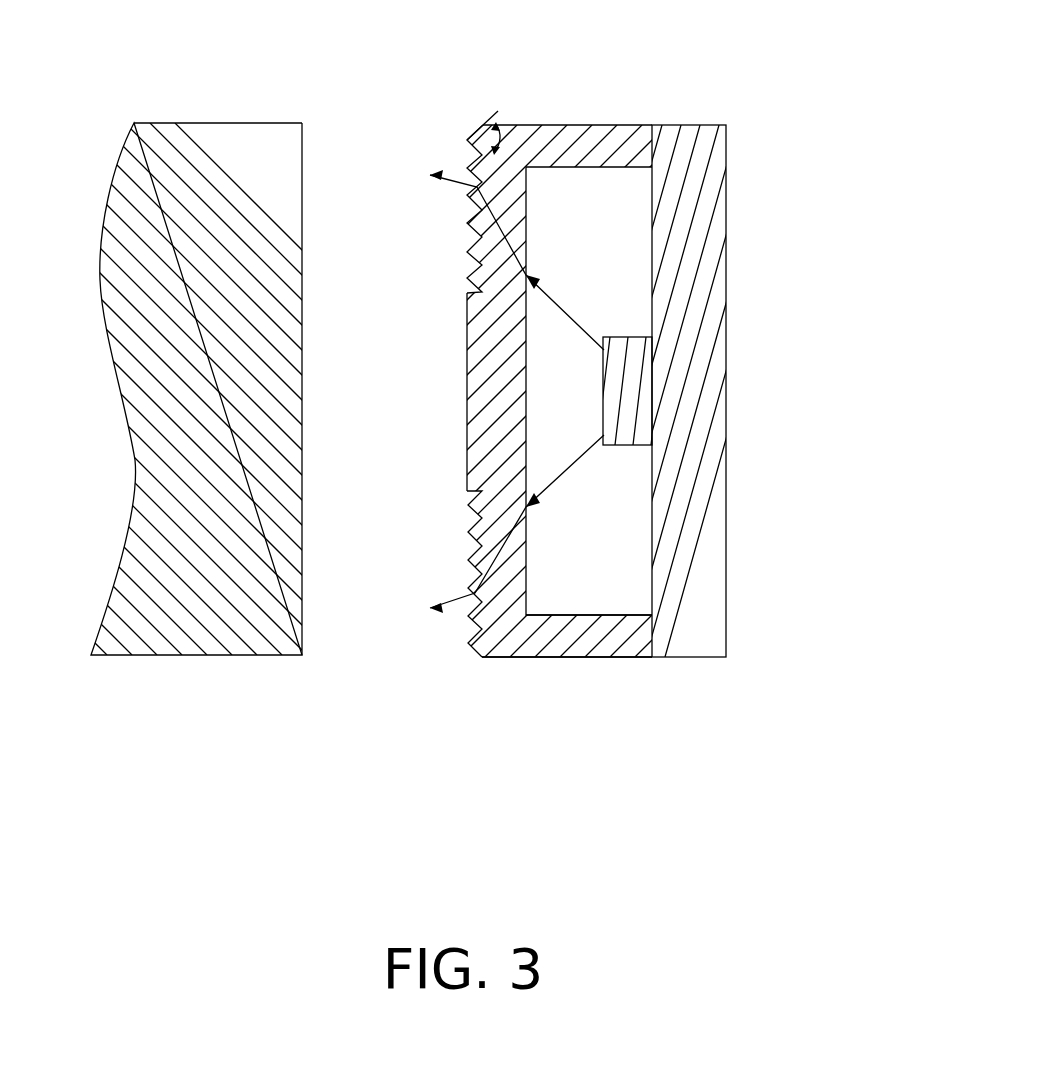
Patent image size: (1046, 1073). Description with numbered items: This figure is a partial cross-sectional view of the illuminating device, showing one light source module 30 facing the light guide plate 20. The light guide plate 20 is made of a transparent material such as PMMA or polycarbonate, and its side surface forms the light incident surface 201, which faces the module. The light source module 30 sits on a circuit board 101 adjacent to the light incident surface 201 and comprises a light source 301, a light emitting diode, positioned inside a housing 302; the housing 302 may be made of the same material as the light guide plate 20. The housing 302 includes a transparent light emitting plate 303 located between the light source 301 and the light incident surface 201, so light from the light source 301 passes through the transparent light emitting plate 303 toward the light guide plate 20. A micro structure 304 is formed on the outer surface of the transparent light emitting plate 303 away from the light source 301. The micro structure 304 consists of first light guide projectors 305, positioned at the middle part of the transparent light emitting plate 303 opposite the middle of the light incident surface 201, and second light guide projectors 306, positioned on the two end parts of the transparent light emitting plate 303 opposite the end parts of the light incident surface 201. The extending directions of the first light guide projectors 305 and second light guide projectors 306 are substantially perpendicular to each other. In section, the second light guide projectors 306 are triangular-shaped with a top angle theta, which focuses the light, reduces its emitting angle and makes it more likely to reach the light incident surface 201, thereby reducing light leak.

The light guide plate 20 is at (208, 147).
The light incident surface 201 is at (302, 606).
The light source module 30 is at (628, 78).
The circuit board 101 is at (690, 217).
The light source 301 is at (623, 392).
The housing 302 is at (587, 635).
The transparent light emitting plate 303 is at (515, 317).
The micro structure 304 is at (380, 437).
The first light guide projectors 305 is at (475, 430).
The second light guide projectors 306 is at (472, 530).